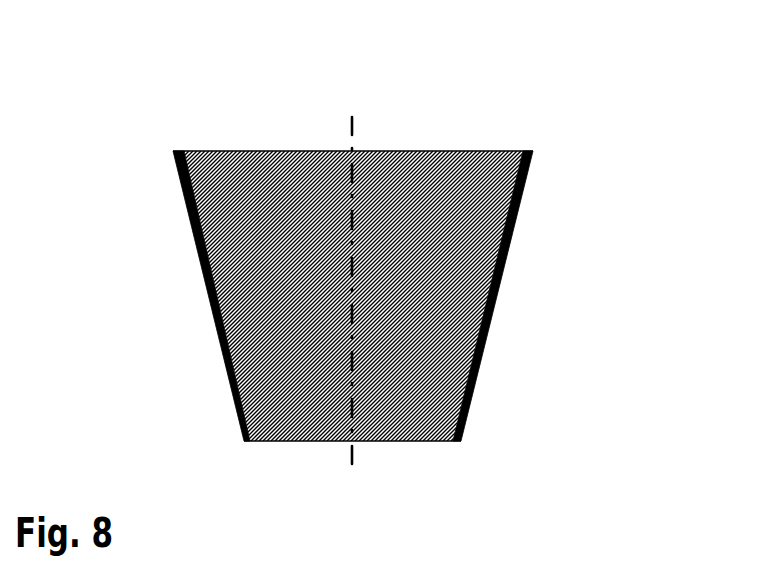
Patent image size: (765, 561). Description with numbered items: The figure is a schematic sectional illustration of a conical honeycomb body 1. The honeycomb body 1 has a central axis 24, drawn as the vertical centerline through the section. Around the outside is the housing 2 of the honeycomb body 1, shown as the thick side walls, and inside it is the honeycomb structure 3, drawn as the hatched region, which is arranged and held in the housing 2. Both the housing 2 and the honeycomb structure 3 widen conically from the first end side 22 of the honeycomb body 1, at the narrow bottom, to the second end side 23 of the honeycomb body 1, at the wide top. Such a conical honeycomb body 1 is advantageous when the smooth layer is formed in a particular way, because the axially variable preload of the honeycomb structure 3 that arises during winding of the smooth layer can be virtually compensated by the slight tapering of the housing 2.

The honeycomb body 1 is at (382, 292).
The housing 2 is at (513, 249).
The honeycomb structure 3 is at (466, 360).
The first end side 22 is at (303, 446).
The second end side 23 is at (278, 150).
The central axis 24 is at (356, 128).